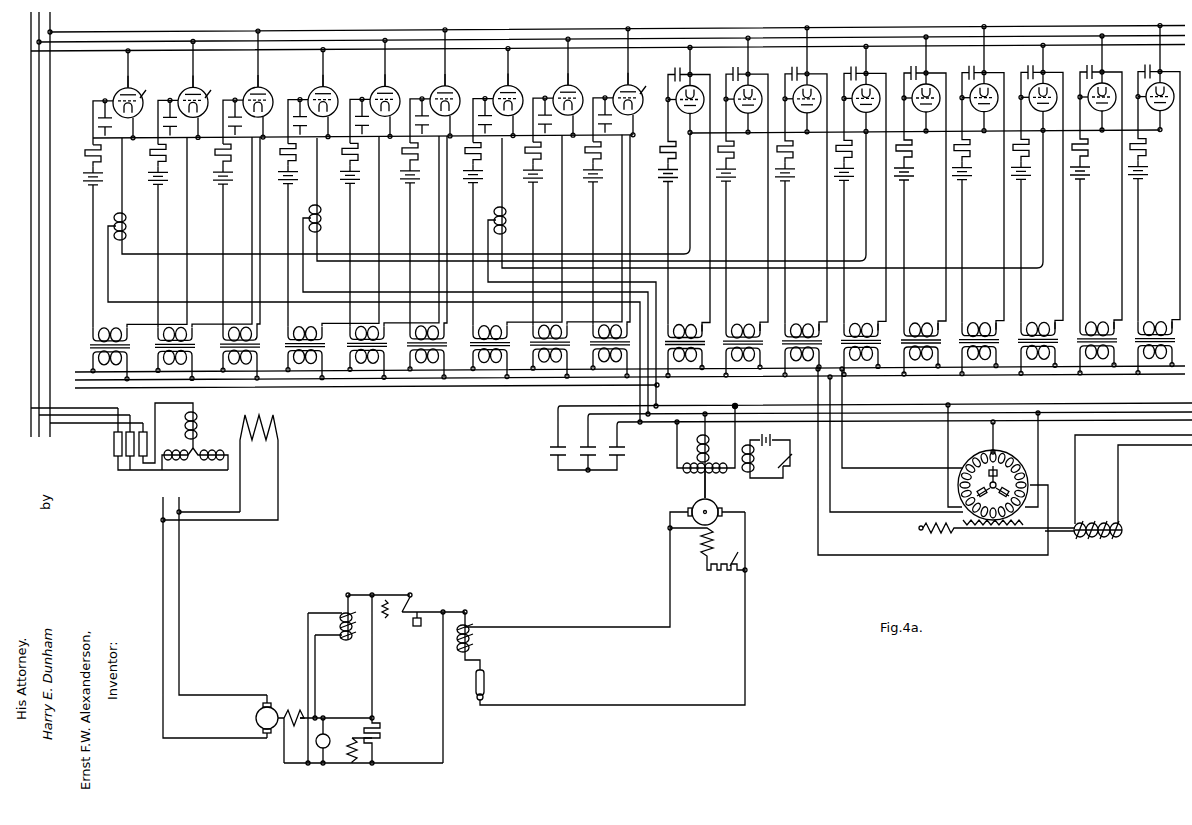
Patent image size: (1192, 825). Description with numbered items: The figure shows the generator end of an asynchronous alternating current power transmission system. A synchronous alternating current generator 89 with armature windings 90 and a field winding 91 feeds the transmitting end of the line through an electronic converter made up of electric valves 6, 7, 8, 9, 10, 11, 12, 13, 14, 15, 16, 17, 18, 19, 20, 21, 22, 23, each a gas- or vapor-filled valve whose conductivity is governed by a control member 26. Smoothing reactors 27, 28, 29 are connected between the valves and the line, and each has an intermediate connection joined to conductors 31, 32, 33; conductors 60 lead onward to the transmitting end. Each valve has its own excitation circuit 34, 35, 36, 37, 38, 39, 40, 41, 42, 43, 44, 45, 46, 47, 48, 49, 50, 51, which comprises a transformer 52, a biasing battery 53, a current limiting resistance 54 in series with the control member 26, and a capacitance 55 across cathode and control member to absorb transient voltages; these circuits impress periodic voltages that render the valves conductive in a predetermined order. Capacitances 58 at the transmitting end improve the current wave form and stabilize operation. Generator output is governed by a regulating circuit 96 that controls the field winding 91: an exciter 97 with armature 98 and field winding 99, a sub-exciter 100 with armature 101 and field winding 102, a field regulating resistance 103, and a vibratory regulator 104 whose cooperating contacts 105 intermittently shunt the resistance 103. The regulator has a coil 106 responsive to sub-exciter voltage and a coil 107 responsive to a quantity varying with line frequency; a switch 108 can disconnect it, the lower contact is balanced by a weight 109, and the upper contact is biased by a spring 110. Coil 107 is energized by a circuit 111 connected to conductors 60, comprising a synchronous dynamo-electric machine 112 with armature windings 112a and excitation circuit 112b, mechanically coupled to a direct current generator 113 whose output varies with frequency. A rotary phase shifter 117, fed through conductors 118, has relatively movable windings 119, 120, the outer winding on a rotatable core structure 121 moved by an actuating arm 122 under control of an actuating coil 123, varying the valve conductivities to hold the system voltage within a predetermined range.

The electric valve 6 is at (118, 86).
The electric valve 7 is at (183, 86).
The electric valve 8 is at (248, 85).
The electric valve 9 is at (313, 85).
The electric valve 10 is at (375, 84).
The electric valve 11 is at (435, 84).
The electric valve 12 is at (498, 84).
The electric valve 13 is at (558, 83).
The electric valve 14 is at (618, 83).
The electric valve 15 is at (684, 189).
The electric valve 16 is at (742, 183).
The electric valve 17 is at (801, 178).
The electric valve 18 is at (860, 187).
The electric valve 19 is at (920, 182).
The electric valve 20 is at (978, 177).
The electric valve 21 is at (1037, 186).
The electric valve 22 is at (1096, 181).
The electric valve 23 is at (1154, 176).
The control member 26 is at (400, 85).
The smoothing reactor 27 is at (128, 222).
The smoothing reactor 28 is at (323, 218).
The smoothing reactor 29 is at (508, 216).
The conductor 31 is at (188, 302).
The conductor 32 is at (374, 292).
The conductor 33 is at (570, 280).
The excitation circuit 34 is at (118, 322).
The excitation circuit 35 is at (183, 321).
The excitation circuit 36 is at (248, 321).
The excitation circuit 37 is at (313, 321).
The excitation circuit 38 is at (375, 320).
The excitation circuit 39 is at (435, 320).
The excitation circuit 40 is at (498, 320).
The excitation circuit 41 is at (558, 319).
The excitation circuit 42 is at (618, 319).
The excitation circuit 43 is at (693, 318).
The excitation circuit 44 is at (751, 318).
The excitation circuit 45 is at (810, 318).
The excitation circuit 46 is at (869, 317).
The excitation circuit 47 is at (929, 317).
The excitation circuit 48 is at (987, 317).
The excitation circuit 49 is at (1046, 316).
The excitation circuit 50 is at (1105, 316).
The excitation circuit 51 is at (1163, 316).
The transformer 52 is at (91, 348).
The battery 53 is at (89, 184).
The current limiting resistance 54 is at (89, 158).
The capacitance 55 is at (102, 120).
The capacitances 58 is at (614, 448).
The conductors 60 is at (1175, 408).
The alternating current generator 89 is at (222, 430).
The armature windings 90 is at (188, 436).
The field winding 91 is at (277, 422).
The regulating circuit 96 is at (470, 562).
The exciter 97 is at (296, 700).
The armature 98 is at (256, 719).
The field winding 99 is at (291, 736).
The sub-exciter 100 is at (352, 712).
The armature 101 is at (328, 738).
The field winding 102 is at (356, 758).
The field regulating resistance 103 is at (379, 739).
The regulator 104 is at (408, 654).
The cooperating contacts 105 is at (413, 598).
The coil 106 is at (342, 626).
The coil 107 is at (473, 640).
The switch 108 is at (485, 680).
The weight 109 is at (428, 627).
The spring 110 is at (390, 617).
The circuit 111 is at (644, 516).
The dynamo-electric machine 112 is at (667, 464).
The armature windings 112a is at (713, 456).
The excitation circuit 112b is at (778, 490).
The direct current generator 113 is at (738, 550).
The rotary phase shifter 117 is at (1030, 440).
The conductors 118 is at (1172, 444).
The outer winding 119 is at (1028, 458).
The winding 120 is at (974, 497).
The rotatable core structure 121 is at (977, 456).
The actuating arm 122 is at (1010, 530).
The actuating coil 123 is at (1100, 542).